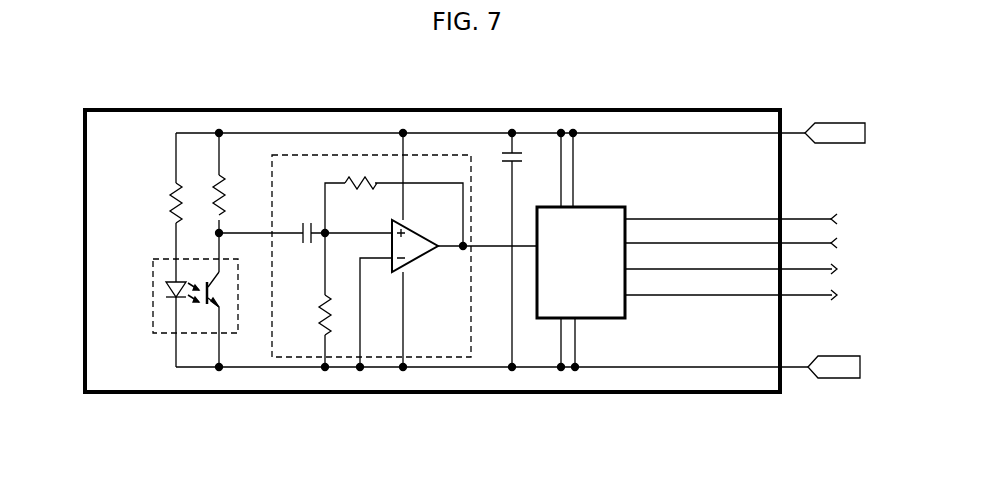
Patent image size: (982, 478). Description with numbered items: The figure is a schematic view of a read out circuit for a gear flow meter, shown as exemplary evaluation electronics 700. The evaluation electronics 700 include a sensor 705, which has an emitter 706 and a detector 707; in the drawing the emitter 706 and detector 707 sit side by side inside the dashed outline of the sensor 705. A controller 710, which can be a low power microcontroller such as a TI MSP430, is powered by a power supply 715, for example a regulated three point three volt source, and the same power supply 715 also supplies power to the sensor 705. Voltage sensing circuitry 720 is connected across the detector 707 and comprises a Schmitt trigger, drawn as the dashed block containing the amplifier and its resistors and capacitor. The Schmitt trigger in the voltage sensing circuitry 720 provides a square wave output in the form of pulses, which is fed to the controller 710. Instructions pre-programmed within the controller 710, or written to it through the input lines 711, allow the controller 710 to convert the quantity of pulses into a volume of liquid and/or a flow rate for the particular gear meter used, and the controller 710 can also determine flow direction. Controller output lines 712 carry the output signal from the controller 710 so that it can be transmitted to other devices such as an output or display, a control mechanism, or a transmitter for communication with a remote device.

The evaluation electronics 700 is at (200, 85).
The sensor 705 is at (153, 319).
The emitter 706 is at (153, 291).
The detector 707 is at (226, 294).
The controller 710 is at (600, 318).
The input lines 711 is at (800, 237).
The controller output lines 712 is at (812, 268).
The power supply 715 is at (818, 123).
The voltage sensing circuitry 720 is at (296, 157).